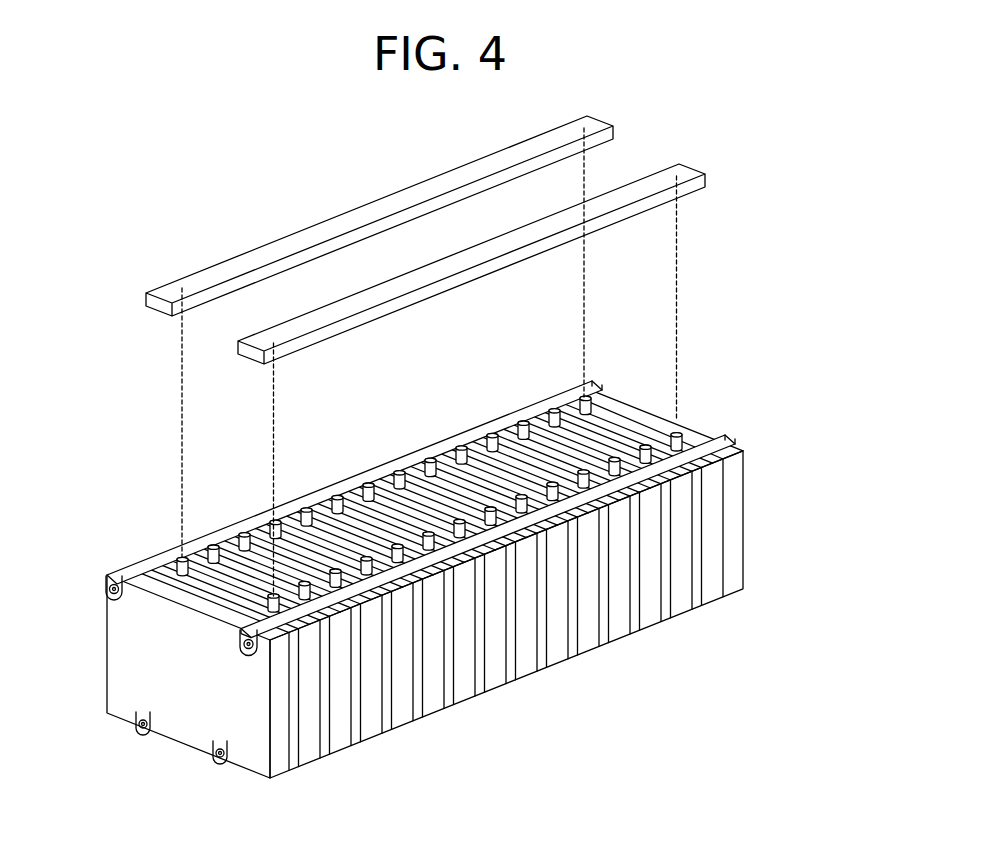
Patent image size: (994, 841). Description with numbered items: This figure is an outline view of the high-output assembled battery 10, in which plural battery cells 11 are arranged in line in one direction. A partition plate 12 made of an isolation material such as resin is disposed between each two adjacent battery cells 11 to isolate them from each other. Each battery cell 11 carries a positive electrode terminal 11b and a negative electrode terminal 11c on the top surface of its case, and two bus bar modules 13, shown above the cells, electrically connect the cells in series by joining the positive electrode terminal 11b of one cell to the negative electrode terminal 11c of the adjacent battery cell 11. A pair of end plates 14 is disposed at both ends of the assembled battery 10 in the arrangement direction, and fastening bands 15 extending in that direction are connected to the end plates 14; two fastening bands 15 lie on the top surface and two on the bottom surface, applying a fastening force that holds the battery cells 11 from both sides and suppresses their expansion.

The high-output assembled battery 10 is at (523, 749).
The battery cell 11 is at (622, 427).
The positive electrode terminal 11b is at (552, 410).
The negative electrode terminal 11c is at (578, 404).
The partition plate 12 is at (517, 472).
The bus bar module 13 is at (318, 236).
The end plate 14 is at (736, 506).
The fastening band 15 is at (373, 472).